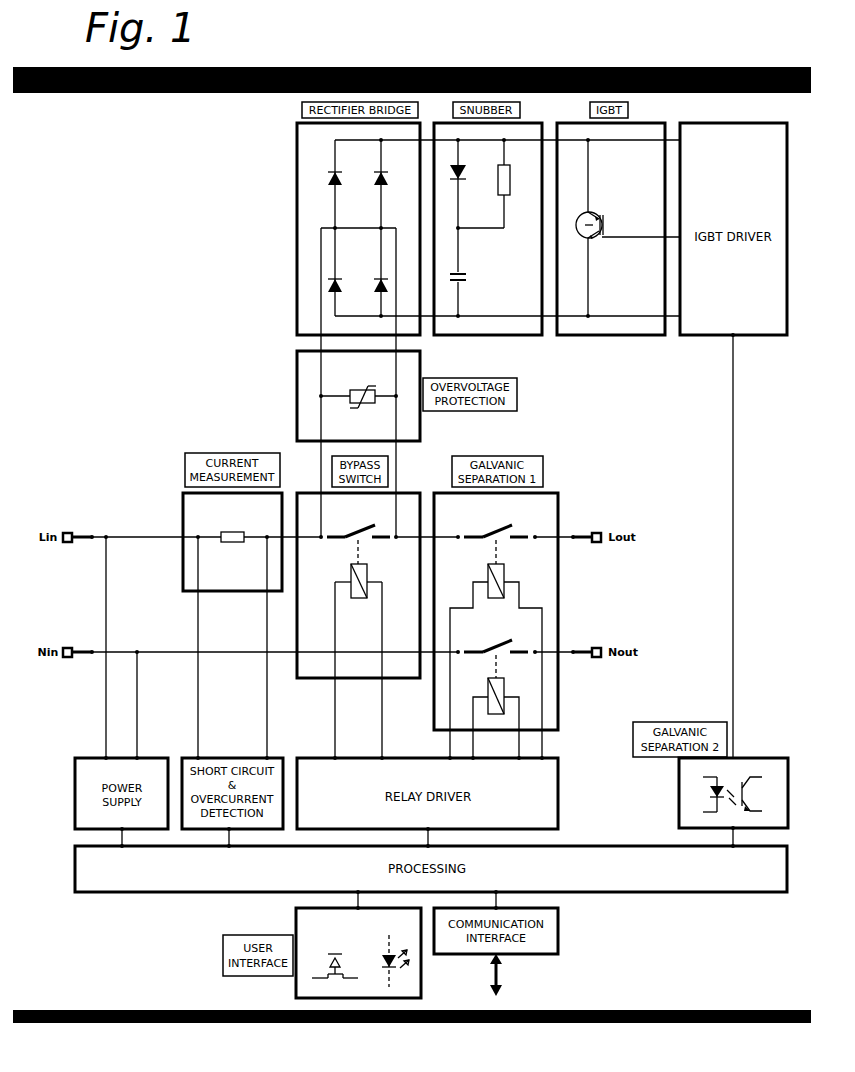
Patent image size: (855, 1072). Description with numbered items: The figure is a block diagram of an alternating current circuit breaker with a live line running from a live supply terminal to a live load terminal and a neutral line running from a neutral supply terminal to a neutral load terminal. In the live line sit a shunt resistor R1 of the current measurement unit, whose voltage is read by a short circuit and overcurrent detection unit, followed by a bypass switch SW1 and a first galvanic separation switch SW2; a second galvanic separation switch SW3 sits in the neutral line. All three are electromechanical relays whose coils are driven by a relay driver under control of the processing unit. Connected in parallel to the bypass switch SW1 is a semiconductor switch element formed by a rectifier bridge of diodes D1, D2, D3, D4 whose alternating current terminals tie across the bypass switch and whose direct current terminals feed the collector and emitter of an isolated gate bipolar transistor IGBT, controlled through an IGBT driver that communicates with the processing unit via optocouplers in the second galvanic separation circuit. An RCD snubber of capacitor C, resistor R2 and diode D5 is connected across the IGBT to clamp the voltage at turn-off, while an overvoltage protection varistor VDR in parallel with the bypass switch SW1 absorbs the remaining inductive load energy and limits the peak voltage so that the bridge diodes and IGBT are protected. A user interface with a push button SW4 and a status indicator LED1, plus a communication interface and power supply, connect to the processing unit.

The bridge diode D1 is at (341, 187).
The bridge diode D2 is at (341, 277).
The bridge diode D3 is at (376, 187).
The bridge diode D4 is at (376, 277).
The snubber diode D5 is at (468, 172).
The snubber resistor R2 is at (513, 180).
The snubber capacitor C is at (464, 278).
The isolated gate bipolar transistor IGBT is at (607, 225).
The overvoltage protection varistor VDR is at (363, 389).
The shunt resistor R1 is at (235, 538).
The bypass switch SW1 is at (358, 555).
The first galvanic separation switch SW2 is at (496, 555).
The second galvanic separation switch SW3 is at (496, 670).
The push button SW4 is at (334, 950).
The status indicator LED LED1 is at (392, 954).